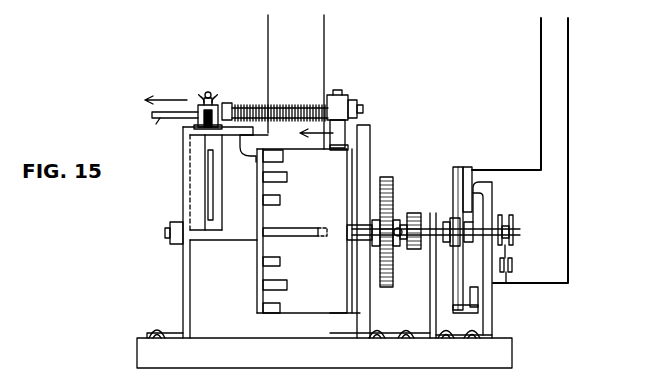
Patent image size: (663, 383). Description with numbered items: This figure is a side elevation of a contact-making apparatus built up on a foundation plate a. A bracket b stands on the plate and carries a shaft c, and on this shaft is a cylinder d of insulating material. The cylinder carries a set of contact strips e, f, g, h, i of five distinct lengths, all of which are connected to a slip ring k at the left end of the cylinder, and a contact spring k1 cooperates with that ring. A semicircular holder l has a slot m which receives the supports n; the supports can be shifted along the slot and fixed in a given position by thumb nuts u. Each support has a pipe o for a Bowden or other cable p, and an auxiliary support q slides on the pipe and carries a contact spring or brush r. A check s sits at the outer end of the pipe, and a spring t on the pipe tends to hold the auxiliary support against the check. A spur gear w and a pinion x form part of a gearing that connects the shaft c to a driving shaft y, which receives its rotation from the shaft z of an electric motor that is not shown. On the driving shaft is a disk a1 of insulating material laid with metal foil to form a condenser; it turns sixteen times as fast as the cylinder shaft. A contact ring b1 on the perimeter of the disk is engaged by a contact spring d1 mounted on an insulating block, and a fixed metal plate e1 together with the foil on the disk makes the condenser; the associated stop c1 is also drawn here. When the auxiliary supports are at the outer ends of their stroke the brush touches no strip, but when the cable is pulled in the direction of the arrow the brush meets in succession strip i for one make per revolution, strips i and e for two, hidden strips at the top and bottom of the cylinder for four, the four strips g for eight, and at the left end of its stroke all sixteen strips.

The foundation plate a is at (502, 356).
The bracket b is at (188, 278).
The shaft c is at (170, 232).
The cylinder of insulating material d is at (277, 243).
The contact strip e is at (273, 232).
The contact strip f is at (267, 262).
The contact strip g is at (267, 288).
The contact strip h is at (267, 307).
The contact strip i is at (327, 237).
The slip ring k is at (259, 183).
The contact spring k1 is at (250, 153).
The semicircular holder l is at (200, 200).
The slot m is at (208, 177).
The support n is at (213, 110).
The pipe o is at (198, 108).
The cable p is at (162, 119).
The auxiliary support q is at (342, 105).
The contact spring or brush r is at (340, 133).
The check s is at (357, 100).
The spring t is at (287, 105).
The wing nut u is at (212, 93).
The spur gear w is at (388, 178).
The pinion x is at (416, 213).
The driving shaft y is at (515, 230).
The shaft of electric motor z is at (517, 265).
The disk of insulating material a1 is at (455, 168).
The contact ring b1 is at (461, 168).
The stop c1 is at (482, 308).
The contact spring d1 is at (455, 302).
The fixed metal plate e1 is at (469, 170).